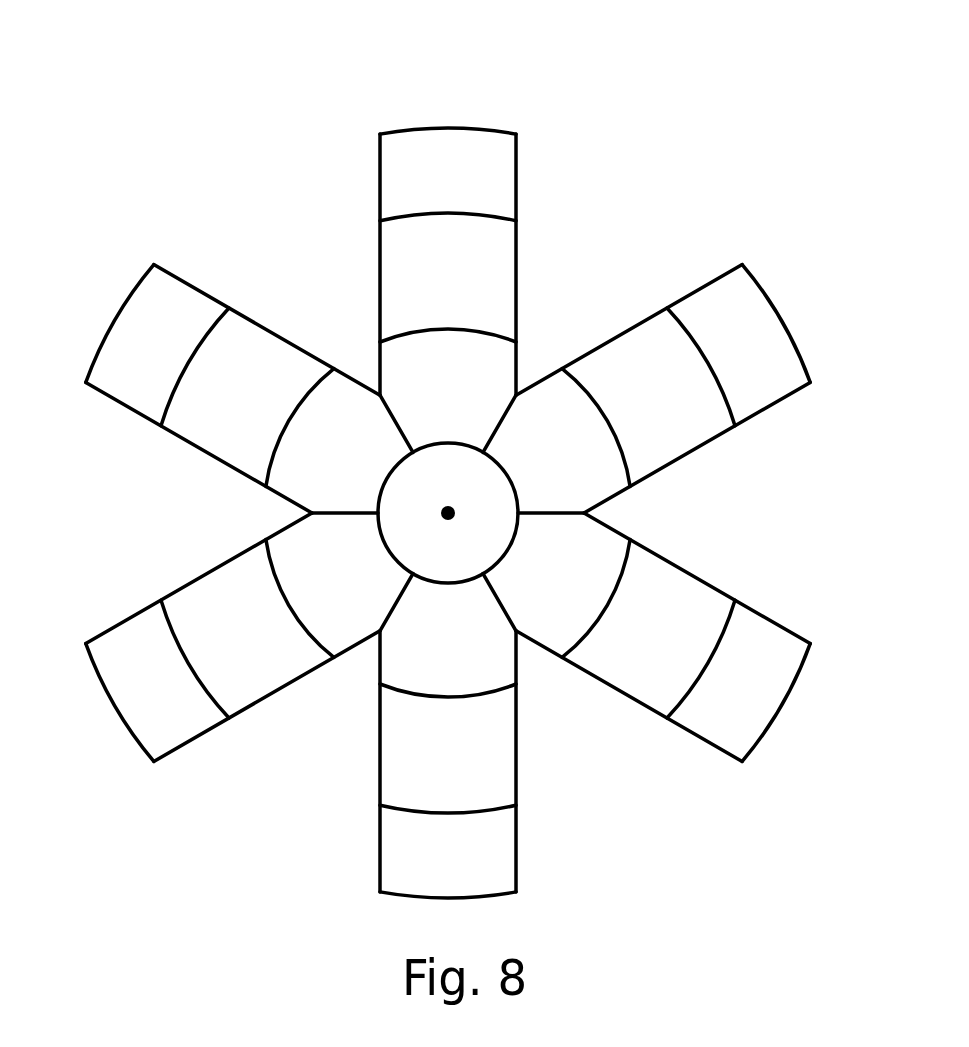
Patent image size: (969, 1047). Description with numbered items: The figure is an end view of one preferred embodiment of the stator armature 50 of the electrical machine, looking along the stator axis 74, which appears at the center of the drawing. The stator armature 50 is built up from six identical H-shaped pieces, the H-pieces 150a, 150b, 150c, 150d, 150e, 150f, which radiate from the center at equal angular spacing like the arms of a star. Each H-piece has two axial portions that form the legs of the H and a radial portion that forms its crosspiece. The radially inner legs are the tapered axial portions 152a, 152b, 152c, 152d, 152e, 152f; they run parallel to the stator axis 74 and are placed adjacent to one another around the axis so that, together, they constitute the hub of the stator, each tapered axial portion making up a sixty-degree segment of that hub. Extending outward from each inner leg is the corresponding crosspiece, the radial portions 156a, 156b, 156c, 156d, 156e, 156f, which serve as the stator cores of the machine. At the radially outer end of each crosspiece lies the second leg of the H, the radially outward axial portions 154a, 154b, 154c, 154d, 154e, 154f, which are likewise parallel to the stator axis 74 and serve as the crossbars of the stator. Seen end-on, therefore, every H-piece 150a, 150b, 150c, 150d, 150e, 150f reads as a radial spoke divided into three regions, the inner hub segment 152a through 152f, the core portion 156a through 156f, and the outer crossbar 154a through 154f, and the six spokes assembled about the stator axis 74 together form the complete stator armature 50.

The stator armature 50 is at (652, 134).
The stator axis 74 is at (457, 508).
The H-piece 150a is at (507, 293).
The H-piece 150b is at (695, 447).
The H-piece 150c is at (683, 580).
The H-piece 150d is at (507, 742).
The H-piece 150e is at (203, 578).
The H-piece 150f is at (190, 448).
The axial portion 152a is at (414, 385).
The axial portion 152b is at (534, 465).
The axial portion 152c is at (533, 600).
The axial portion 152d is at (414, 678).
The axial portion 152e is at (316, 593).
The axial portion 152f is at (301, 468).
The axial portion 154a is at (414, 187).
The axial portion 154b is at (711, 348).
The axial portion 154c is at (696, 715).
The axial portion 154d is at (414, 867).
The axial portion 154e is at (123, 702).
The axial portion 154f is at (113, 358).
The radial portion 156a is at (414, 278).
The radial portion 156b is at (629, 396).
The radial portion 156c is at (633, 655).
The radial portion 156d is at (414, 768).
The radial portion 156e is at (208, 650).
The radial portion 156f is at (203, 393).